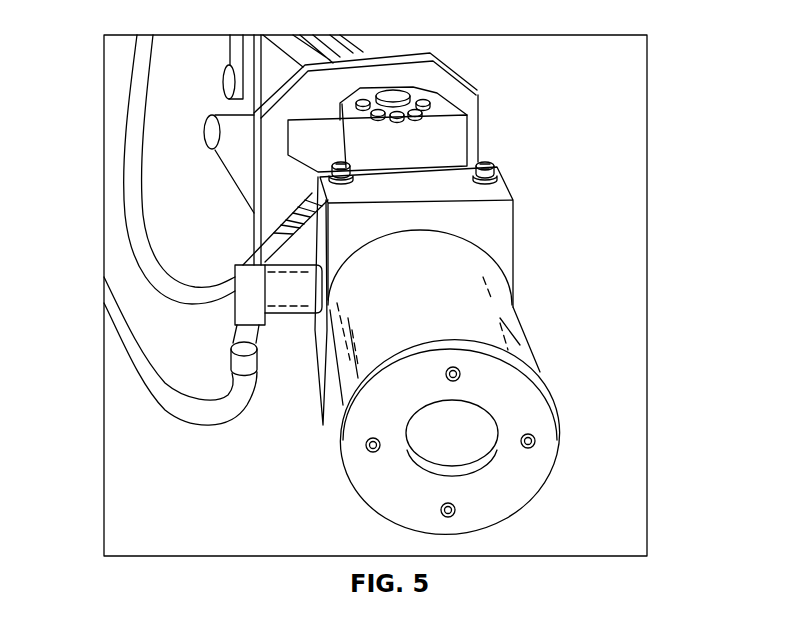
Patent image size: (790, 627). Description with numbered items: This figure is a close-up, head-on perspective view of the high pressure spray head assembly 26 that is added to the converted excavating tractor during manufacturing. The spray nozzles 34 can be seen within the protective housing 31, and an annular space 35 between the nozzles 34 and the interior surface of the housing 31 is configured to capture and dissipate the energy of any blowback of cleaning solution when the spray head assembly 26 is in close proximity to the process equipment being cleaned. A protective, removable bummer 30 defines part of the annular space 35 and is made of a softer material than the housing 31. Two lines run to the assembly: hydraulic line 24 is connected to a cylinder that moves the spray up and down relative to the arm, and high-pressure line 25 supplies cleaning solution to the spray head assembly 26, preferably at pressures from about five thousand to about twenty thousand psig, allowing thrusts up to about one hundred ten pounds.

The hydraulic line 24 is at (118, 201).
The high-pressure line 25 is at (142, 388).
The high pressure spray head assembly 26 is at (545, 180).
The protective removable bummer 30 is at (388, 490).
The protective housing 31 is at (326, 372).
The spray nozzles 34 is at (470, 449).
The annular space 35 is at (424, 478).